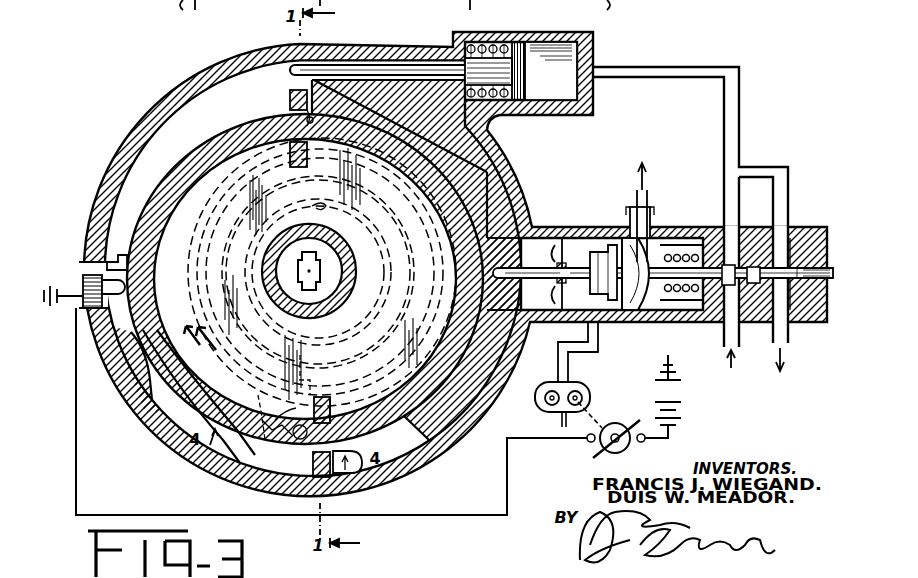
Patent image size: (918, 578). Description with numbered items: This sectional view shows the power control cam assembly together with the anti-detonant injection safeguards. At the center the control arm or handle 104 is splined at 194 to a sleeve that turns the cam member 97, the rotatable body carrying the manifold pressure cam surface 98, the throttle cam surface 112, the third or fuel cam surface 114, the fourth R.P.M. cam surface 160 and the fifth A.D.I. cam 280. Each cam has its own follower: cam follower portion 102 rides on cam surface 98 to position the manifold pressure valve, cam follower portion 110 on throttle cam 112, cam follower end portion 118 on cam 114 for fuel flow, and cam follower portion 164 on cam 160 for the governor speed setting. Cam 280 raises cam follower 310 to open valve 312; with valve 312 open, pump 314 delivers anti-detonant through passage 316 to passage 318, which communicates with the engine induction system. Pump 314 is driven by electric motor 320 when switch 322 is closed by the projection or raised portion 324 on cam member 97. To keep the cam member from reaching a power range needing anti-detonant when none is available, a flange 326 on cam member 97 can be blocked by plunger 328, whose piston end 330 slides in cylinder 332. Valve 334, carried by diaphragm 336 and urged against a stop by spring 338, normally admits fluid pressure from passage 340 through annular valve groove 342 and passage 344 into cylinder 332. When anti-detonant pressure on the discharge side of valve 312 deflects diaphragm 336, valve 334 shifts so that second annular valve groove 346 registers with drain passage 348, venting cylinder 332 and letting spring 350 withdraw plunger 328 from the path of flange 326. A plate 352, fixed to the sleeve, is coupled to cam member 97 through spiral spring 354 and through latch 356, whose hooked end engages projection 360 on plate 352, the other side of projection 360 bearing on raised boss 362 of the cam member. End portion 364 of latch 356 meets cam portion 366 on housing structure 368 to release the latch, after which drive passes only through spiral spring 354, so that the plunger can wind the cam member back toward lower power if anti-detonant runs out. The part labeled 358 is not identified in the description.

The cam member 97 is at (163, 192).
The cam surface 98 is at (210, 150).
The cam follower portion 102 is at (296, 96).
The control arm 104 is at (343, 298).
The cam follower portion 110 is at (333, 412).
The cam surface 112 is at (388, 380).
The third cam surface 114 is at (452, 335).
The cam follower end portion 118 is at (303, 492).
The fourth cam surface 160 is at (240, 168).
The cam follower portion 164 is at (291, 162).
The spline 194 is at (328, 270).
The fifth cam 280 is at (470, 140).
The cam follower 310 is at (520, 279).
The valve 312 is at (640, 322).
The pump 314 is at (588, 388).
The passage 316 is at (599, 340).
The passage 318 is at (636, 196).
The electric motor 320 is at (640, 443).
The switch 322 is at (80, 288).
The projection 324 is at (240, 478).
The flange 326 is at (110, 258).
The plunger 328 is at (380, 66).
The piston end 330 is at (528, 102).
The cylinder 332 is at (576, 105).
The valve 334 is at (796, 234).
The diaphragm 336 is at (670, 240).
The spring 338 is at (695, 262).
The passage 340 is at (724, 347).
The annular valve groove 342 is at (708, 316).
The passage 344 is at (724, 100).
The second annular valve groove 346 is at (773, 322).
The drain passage 348 is at (789, 338).
The spring 350 is at (530, 40).
The plate 352 is at (290, 100).
The spiral spring 354 is at (326, 208).
The latch 356 is at (338, 440).
The link 358 is at (257, 394).
The projection 360 is at (296, 408).
The raised boss 362 is at (314, 408).
The end portion 364 is at (355, 480).
The cam portion 366 is at (126, 388).
The housing structure 368 is at (170, 455).